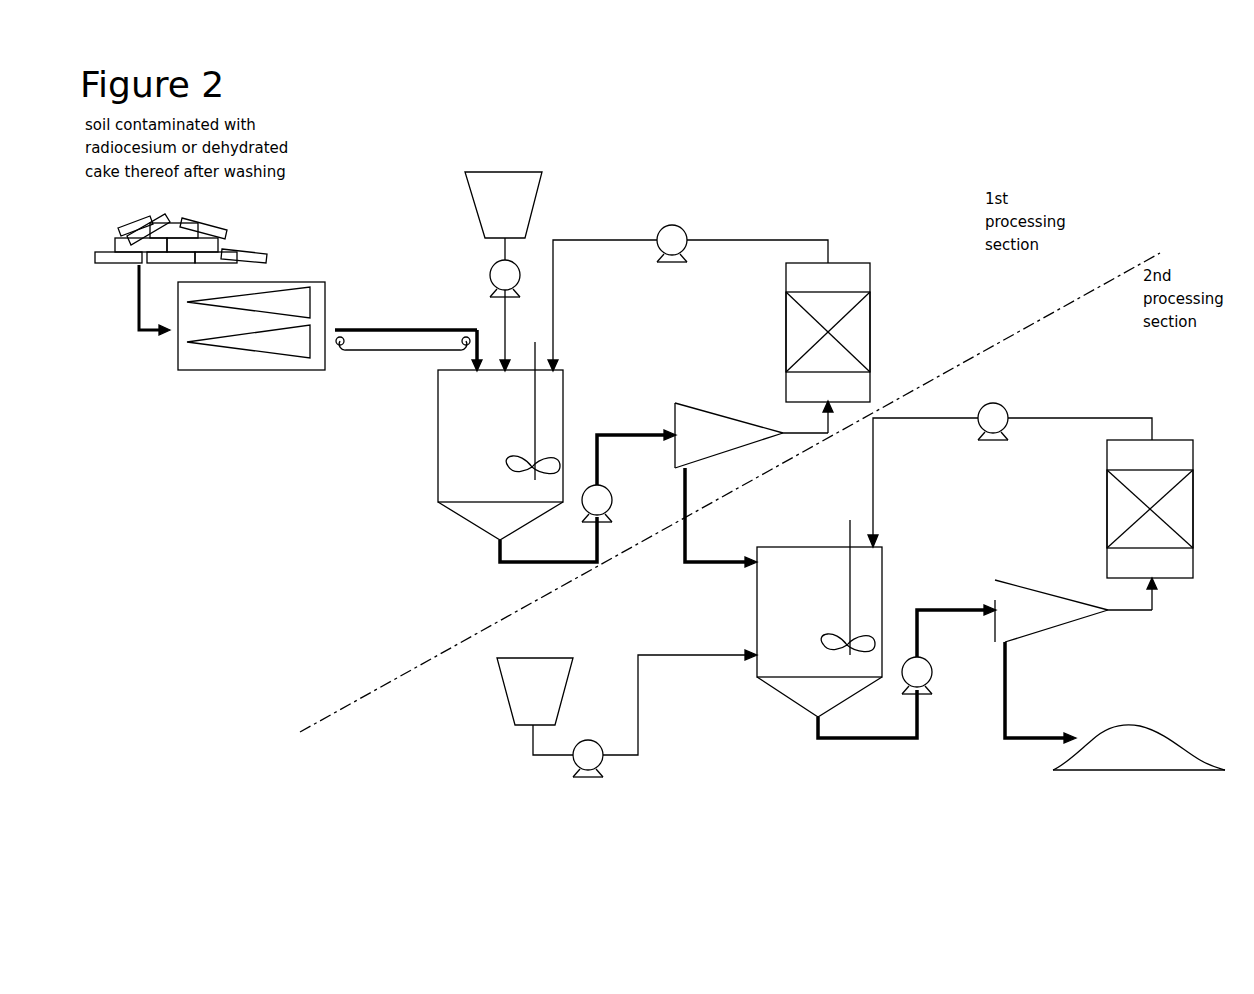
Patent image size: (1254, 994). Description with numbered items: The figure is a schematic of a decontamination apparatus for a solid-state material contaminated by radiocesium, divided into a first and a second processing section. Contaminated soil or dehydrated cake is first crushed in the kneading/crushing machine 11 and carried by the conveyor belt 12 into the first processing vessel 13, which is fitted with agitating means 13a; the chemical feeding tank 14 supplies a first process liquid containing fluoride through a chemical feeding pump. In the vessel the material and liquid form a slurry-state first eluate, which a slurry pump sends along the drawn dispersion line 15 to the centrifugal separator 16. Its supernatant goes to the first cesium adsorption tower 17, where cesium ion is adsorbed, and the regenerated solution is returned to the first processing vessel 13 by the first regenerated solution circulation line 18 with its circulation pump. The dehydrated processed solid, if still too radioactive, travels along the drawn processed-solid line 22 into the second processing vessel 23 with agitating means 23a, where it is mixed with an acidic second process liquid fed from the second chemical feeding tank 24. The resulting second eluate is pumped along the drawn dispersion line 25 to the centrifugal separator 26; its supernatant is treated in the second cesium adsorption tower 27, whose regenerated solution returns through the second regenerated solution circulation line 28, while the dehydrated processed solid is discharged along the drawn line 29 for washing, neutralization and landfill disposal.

The kneading/crushing machine 11 is at (188, 374).
The conveyor belt 12 is at (348, 377).
The first processing vessel 13 is at (440, 442).
The agitating means 13a is at (534, 419).
The chemical feeding tank 14 is at (528, 192).
The slurry pump line for dispersion 1 15 is at (500, 567).
The centrifugal separator 16 is at (680, 402).
The first cesium adsorption tower 17 is at (874, 318).
The first regenerated solution circulation line 18 is at (705, 237).
The processed solid 1 transfer line 22 is at (697, 560).
The second processing vessel 23 is at (760, 676).
The agitating means 23a is at (845, 584).
The second chemical feeding tank 24 is at (515, 690).
The slurry pump line for dispersion 2 25 is at (830, 743).
The centrifugal separator 26 is at (1063, 622).
The second cesium adsorption tower 27 is at (1168, 440).
The second regenerated solution circulation line 28 is at (1033, 416).
The processed solid 2 discharge line 29 is at (1005, 748).